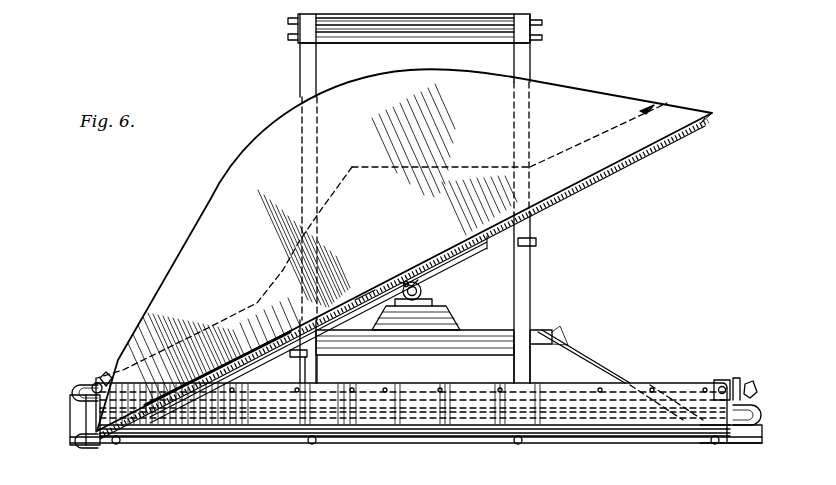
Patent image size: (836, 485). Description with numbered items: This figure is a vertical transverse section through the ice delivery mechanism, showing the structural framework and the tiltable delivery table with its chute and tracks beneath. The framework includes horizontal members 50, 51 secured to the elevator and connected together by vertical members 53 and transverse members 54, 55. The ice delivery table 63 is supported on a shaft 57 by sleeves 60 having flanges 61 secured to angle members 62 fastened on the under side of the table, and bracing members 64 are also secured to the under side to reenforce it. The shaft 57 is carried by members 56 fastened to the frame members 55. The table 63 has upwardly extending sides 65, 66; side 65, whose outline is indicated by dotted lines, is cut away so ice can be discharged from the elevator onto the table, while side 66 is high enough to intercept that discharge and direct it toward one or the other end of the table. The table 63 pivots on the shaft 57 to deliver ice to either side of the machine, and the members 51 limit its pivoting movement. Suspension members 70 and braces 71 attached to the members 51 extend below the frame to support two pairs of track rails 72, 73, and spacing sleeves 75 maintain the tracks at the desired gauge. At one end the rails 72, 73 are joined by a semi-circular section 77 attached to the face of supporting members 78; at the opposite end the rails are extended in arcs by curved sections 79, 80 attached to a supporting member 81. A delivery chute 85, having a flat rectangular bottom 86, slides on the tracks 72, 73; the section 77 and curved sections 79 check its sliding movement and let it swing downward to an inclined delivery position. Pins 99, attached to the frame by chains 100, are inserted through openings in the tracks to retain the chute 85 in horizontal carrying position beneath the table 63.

The horizontal member 50 is at (532, 28).
The horizontal member 51 is at (288, 330).
The vertical member 53 is at (300, 76).
The transverse member 54 is at (398, 32).
The transverse member 55 is at (400, 346).
The member 56 is at (366, 298).
The shaft 57 is at (440, 305).
The sleeve 60 is at (425, 292).
The flange 61 is at (437, 272).
The angle member 62 is at (408, 282).
The delivery table 63 is at (648, 150).
The bracing member 64 is at (537, 242).
The side 65 is at (672, 103).
The side 66 is at (613, 97).
The suspension member 70 is at (514, 370).
The brace 71 is at (598, 364).
The track rail 72 is at (385, 415).
The track rail 73 is at (432, 445).
The spacing sleeve 75 is at (714, 446).
The semi-circular section 77 is at (763, 408).
The supporting member 78 is at (763, 441).
The curved section 79 is at (72, 390).
The curved section 80 is at (72, 441).
The supporting member 81 is at (72, 412).
The delivery chute 85 is at (675, 383).
The bottom 86 is at (606, 420).
The pin 99 is at (740, 378).
The chain 100 is at (756, 384).